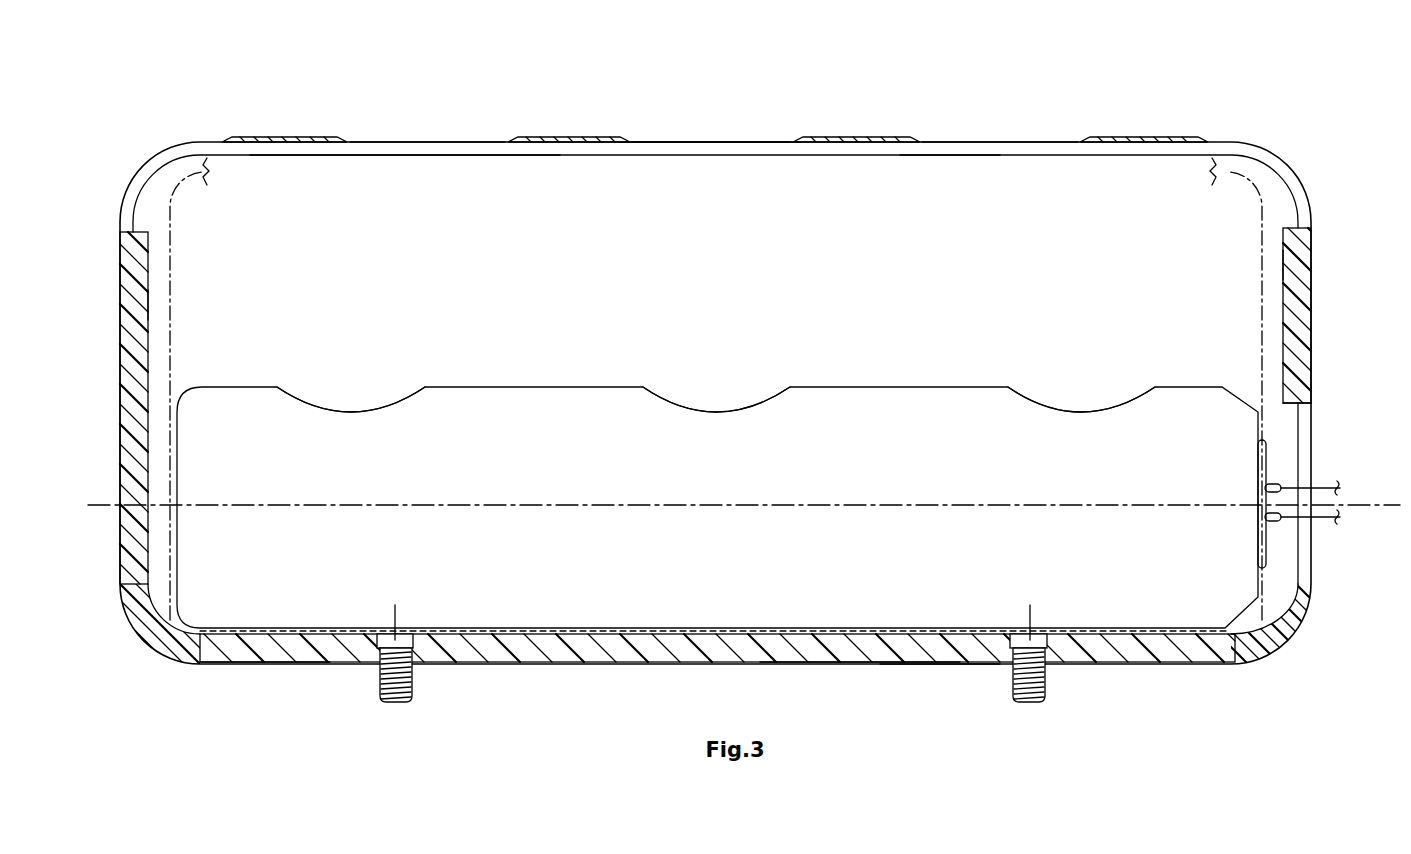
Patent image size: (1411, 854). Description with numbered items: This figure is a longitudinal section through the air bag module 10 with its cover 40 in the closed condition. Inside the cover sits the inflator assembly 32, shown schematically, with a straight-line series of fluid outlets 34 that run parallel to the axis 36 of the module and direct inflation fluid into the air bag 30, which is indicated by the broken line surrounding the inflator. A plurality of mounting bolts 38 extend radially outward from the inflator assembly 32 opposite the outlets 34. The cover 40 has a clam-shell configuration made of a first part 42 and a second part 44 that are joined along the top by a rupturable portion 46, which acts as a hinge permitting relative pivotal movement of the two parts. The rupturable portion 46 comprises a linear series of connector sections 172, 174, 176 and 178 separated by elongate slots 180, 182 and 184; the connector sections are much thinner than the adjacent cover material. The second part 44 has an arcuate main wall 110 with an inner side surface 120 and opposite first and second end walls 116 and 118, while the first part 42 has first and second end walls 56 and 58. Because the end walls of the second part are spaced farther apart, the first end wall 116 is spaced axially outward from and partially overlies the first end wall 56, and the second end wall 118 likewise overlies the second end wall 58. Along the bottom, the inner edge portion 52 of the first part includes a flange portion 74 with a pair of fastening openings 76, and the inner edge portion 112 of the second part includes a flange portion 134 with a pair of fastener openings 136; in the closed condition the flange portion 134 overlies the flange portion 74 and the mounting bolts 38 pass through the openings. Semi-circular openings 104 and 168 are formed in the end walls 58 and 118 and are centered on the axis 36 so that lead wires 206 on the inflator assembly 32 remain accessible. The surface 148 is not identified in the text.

The air bag module 10 is at (631, 82).
The air bag 30 is at (181, 257).
The inflator assembly 32 is at (506, 379).
The fluid outlets 34 is at (342, 412).
The axis 36 is at (592, 507).
The mounting bolts 38 is at (413, 690).
The cover 40 is at (1283, 146).
The first part 42 is at (287, 656).
The second part 44 is at (181, 668).
The rupturable portion 46 is at (745, 131).
The inner edge portion 52 is at (860, 656).
The first end wall 56 is at (1280, 262).
The second end wall 58 is at (152, 300).
The flange portion 74 is at (935, 656).
The fastening openings 76 is at (1035, 632).
The semi-circular opening 104 is at (1300, 581).
The main wall 110 is at (1016, 221).
The inner edge portion 112 is at (558, 666).
The first end wall 116 is at (1313, 280).
The second end wall 118 is at (118, 303).
The inner side surface 120 is at (935, 225).
The flange portion 134 is at (628, 661).
The fastener openings 136 is at (393, 640).
The inner top surface 148 is at (467, 151).
The semi-circular opening 168 is at (1305, 410).
The connector section 172 is at (291, 139).
The connector section 174 is at (553, 140).
The connector section 176 is at (822, 140).
The connector section 178 is at (1109, 140).
The elongate slot 180 is at (397, 142).
The elongate slot 182 is at (693, 141).
The elongate slot 184 is at (996, 142).
The lead wires 206 is at (1322, 490).